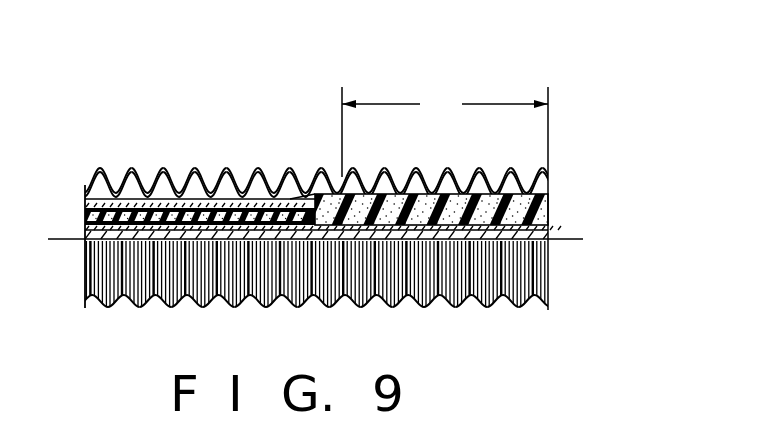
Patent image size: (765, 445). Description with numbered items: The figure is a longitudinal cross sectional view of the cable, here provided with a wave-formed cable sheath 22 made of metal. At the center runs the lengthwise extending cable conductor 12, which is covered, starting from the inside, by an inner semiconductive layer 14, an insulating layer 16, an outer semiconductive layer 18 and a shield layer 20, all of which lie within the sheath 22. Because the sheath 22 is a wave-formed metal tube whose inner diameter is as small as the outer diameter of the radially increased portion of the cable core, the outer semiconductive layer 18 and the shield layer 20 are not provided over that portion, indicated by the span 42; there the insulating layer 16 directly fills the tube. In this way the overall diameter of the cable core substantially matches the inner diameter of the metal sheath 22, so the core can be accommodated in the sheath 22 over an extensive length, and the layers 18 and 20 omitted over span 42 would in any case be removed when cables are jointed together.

The cable conductor 12 is at (556, 241).
The inner semiconductive layer 14 is at (548, 228).
The insulating layer 16 is at (170, 177).
The outer semiconductive layer 18 is at (214, 203).
The shield layer 20 is at (273, 190).
The sheath 22 is at (110, 172).
The bonded region length 42 is at (445, 198).